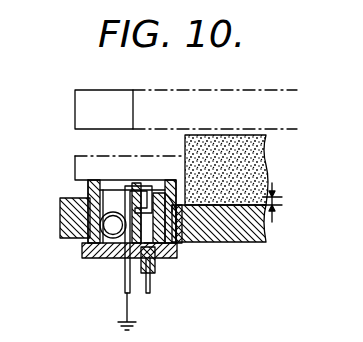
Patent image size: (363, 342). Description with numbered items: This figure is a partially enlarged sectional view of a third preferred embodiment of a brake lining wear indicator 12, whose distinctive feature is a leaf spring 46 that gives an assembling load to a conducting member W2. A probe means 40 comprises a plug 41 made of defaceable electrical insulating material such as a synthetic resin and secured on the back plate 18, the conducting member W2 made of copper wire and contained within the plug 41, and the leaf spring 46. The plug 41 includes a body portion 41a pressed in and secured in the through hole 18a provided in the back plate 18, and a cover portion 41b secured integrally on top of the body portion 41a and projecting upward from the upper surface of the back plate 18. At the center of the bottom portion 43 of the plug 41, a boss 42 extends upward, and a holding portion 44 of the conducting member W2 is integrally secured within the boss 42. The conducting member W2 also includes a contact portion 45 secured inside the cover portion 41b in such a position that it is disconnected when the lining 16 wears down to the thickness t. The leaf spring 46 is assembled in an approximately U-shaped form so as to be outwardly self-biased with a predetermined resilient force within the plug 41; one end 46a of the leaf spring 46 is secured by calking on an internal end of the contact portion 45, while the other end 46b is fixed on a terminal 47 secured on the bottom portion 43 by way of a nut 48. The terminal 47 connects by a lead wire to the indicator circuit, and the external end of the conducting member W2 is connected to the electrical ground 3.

The connector housing 12 is at (91, 86).
The boss 42 is at (116, 180).
The lining 16 is at (255, 153).
The back plate 18 is at (250, 244).
The through hole 18a is at (182, 200).
The thickness t is at (279, 204).
The conducting member W2 is at (74, 228).
The probe means 40 is at (124, 181).
The plug 41 is at (88, 180).
The holding portion 44 is at (117, 258).
The bottom portion 43 is at (118, 268).
The leaf spring 46 is at (96, 216).
The one end of the leaf spring 46a is at (167, 178).
The cover portion 41b is at (147, 182).
The body portion 41a is at (171, 248).
The other end of the leaf spring 46b is at (160, 268).
The contact portion 45 is at (133, 180).
The terminal 47 is at (148, 294).
The nut 48 is at (168, 283).
The electrical ground 3 is at (122, 321).